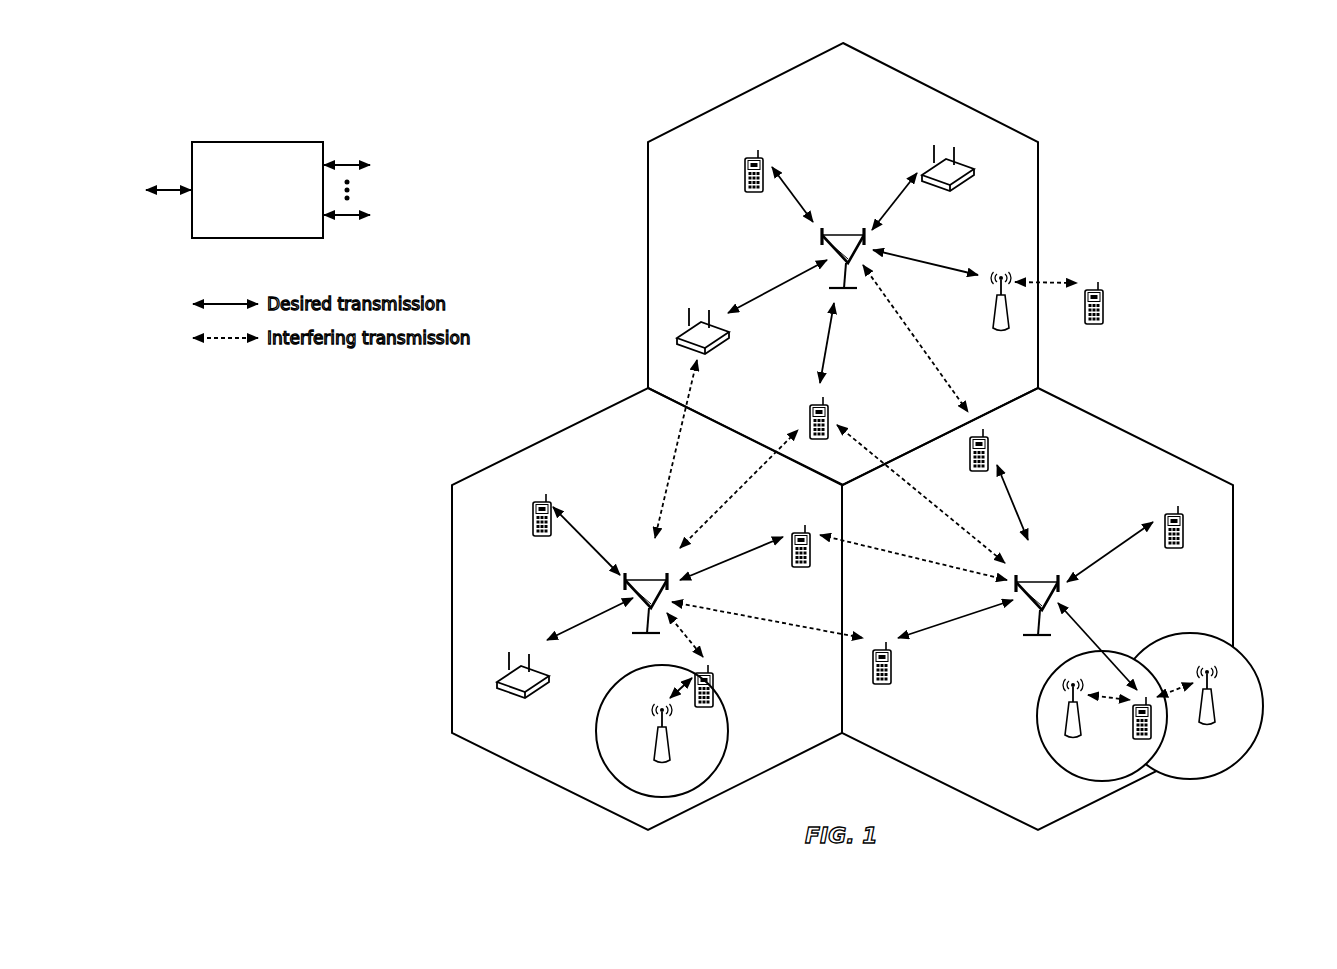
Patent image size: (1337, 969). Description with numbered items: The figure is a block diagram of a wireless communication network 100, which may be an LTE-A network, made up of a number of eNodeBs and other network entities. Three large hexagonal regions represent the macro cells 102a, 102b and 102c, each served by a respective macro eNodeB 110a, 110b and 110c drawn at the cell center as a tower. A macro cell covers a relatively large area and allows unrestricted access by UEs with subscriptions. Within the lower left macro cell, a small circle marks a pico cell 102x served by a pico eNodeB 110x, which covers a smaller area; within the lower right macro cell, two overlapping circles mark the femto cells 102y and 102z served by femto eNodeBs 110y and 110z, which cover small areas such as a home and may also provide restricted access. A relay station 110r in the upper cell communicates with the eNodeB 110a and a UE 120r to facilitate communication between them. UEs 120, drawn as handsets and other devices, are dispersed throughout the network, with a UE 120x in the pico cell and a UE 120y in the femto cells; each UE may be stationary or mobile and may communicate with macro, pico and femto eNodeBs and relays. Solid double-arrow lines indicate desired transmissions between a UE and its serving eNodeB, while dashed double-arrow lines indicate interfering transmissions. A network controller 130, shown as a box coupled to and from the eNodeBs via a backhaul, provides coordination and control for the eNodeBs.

The wireless communication network 100 is at (1172, 108).
The macro cell 102a is at (953, 79).
The macro cell 102b is at (550, 433).
The macro cell 102c is at (1134, 434).
The pico cell 102x is at (616, 681).
The femto cell 102y is at (1040, 688).
The femto cell 102z is at (1185, 632).
The macro eNodeB 110a is at (841, 235).
The macro eNodeB 110b is at (646, 580).
The macro eNodeB 110c is at (1038, 582).
The relay station 110r is at (993, 322).
The pico eNodeB 110x is at (670, 751).
The femto eNodeB 110y is at (1079, 732).
The femto eNodeB 110z is at (1213, 719).
The UE 120 is at (745, 165).
The UE 120r is at (1103, 316).
The UE 120x is at (714, 681).
The UE 120y is at (1133, 733).
The network controller 130 is at (263, 132).